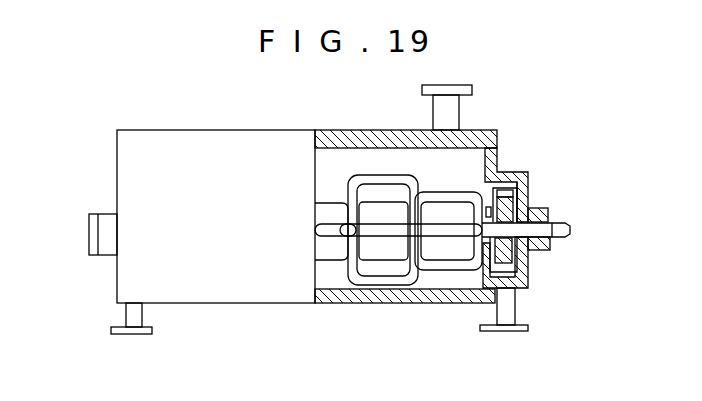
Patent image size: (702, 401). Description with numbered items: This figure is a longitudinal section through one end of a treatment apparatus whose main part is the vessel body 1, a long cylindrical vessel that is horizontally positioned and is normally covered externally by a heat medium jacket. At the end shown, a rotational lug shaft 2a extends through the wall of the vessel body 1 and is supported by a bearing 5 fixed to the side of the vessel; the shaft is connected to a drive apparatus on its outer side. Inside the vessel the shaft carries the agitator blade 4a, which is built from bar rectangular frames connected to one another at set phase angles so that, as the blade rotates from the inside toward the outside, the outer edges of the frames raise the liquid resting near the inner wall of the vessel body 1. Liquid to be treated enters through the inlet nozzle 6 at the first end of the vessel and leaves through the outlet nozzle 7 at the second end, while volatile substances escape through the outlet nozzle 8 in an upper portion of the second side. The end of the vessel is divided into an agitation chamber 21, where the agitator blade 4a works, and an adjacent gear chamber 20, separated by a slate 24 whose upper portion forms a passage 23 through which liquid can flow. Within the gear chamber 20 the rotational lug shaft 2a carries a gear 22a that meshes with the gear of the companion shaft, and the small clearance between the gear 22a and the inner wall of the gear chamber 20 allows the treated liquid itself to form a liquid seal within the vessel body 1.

The vessel body 1 is at (222, 130).
The rotational lug shaft 2a is at (571, 228).
The agitator blade 4a is at (393, 175).
The bearing 5 is at (100, 213).
The inlet nozzle 6 is at (130, 335).
The outlet nozzle 7 is at (510, 332).
The outlet nozzle for volatile substances 8 is at (461, 85).
The gear chamber 20 is at (510, 190).
The agitation chamber 21 is at (333, 160).
The gear 22a is at (530, 195).
The passage 23 is at (484, 193).
The slate 24 is at (483, 275).